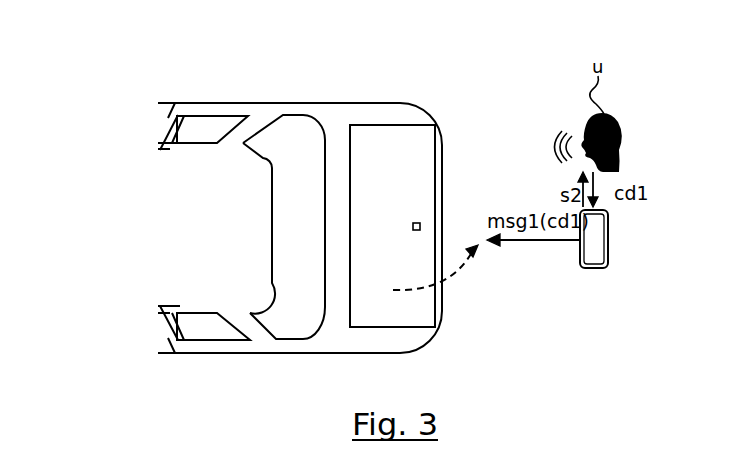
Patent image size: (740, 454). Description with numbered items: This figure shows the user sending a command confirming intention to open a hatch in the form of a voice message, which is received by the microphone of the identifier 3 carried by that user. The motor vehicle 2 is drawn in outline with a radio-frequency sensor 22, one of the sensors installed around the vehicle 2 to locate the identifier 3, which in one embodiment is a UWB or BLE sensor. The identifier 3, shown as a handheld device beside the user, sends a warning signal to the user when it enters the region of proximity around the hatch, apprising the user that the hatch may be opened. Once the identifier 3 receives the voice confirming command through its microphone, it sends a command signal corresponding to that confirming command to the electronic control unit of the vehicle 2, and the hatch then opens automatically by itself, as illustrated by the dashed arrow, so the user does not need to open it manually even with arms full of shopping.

The motor vehicle 2 is at (188, 78).
The radio-frequency sensor 22 is at (417, 223).
The identifier 3 is at (608, 227).